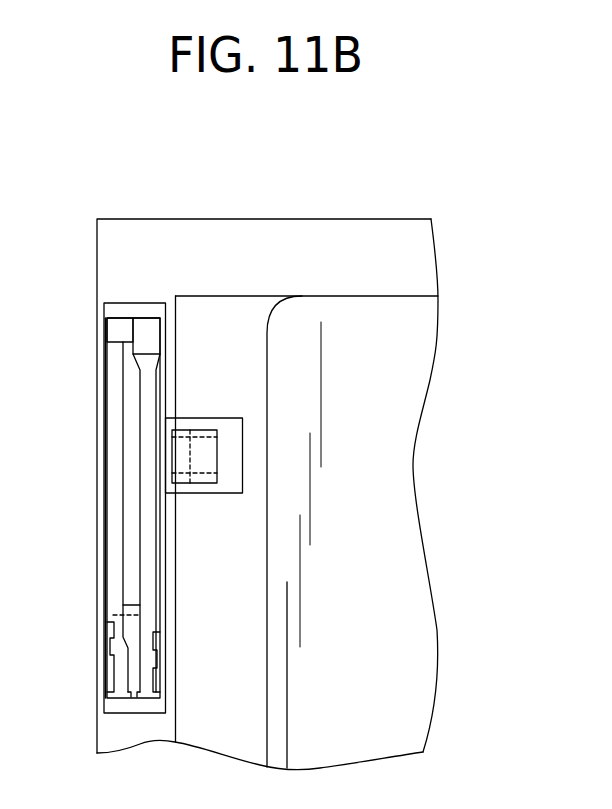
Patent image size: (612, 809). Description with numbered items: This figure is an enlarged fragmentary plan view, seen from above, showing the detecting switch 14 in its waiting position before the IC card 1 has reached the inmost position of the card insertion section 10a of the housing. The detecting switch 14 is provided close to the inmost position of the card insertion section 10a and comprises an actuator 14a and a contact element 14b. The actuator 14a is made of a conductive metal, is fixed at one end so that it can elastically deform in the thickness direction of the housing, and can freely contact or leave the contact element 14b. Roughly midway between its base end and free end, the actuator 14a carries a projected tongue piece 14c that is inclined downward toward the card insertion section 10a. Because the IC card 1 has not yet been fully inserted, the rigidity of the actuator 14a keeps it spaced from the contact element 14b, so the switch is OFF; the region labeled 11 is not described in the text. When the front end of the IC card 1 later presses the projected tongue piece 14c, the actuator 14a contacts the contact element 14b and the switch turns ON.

The IC card 1 is at (383, 470).
The card insertion section 10a is at (239, 317).
The housing 11 is at (418, 255).
The detecting switch 14 is at (126, 493).
The actuator 14a is at (151, 327).
The contact element 14b is at (120, 332).
The projected tongue piece 14c is at (203, 450).